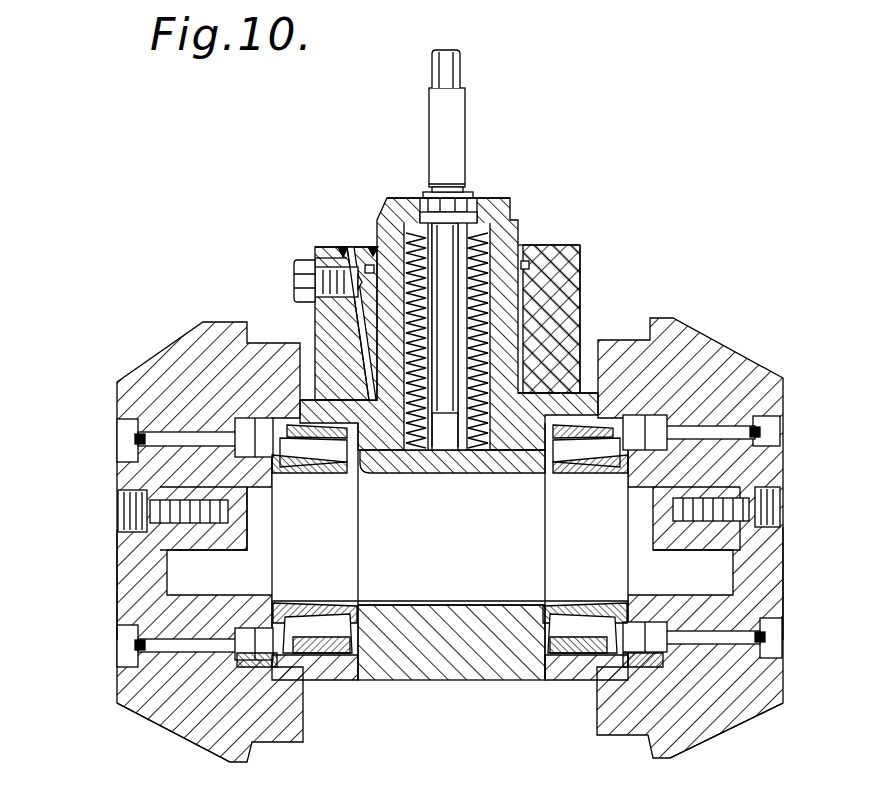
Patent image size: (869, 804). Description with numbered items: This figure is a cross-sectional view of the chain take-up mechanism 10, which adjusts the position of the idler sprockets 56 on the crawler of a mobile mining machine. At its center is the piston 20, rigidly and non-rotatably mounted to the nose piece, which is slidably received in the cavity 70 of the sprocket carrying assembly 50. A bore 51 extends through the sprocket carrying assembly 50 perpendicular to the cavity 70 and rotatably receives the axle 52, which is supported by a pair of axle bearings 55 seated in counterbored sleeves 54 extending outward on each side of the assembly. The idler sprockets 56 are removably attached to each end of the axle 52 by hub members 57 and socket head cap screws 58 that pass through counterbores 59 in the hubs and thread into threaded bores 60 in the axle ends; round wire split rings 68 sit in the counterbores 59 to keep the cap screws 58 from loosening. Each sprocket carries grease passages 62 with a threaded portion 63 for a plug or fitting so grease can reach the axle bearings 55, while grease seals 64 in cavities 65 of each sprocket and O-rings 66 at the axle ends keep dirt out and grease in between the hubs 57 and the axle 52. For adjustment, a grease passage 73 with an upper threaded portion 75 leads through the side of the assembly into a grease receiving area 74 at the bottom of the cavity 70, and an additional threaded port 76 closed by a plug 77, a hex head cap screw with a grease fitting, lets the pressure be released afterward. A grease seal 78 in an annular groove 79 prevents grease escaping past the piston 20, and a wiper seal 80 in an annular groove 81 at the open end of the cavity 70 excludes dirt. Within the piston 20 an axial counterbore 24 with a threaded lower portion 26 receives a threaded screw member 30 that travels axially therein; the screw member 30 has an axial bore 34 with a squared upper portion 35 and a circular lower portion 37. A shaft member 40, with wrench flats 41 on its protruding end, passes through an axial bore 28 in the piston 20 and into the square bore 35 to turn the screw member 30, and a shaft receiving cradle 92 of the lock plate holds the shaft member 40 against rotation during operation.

The take-up mechanism 10 is at (552, 184).
The piston 20 is at (522, 227).
The axial counterbore 24 is at (583, 302).
The threaded lower portion 26 is at (375, 470).
The axial bore 28 is at (480, 195).
The threaded screw member 30 is at (492, 198).
The axial bore 34 is at (455, 440).
The squared upper portion 35 is at (420, 228).
The circular lower portion 37 is at (571, 322).
The shaft member 40 is at (460, 105).
The wrench flats 41 is at (455, 68).
The sprocket carrying assembly 50 is at (592, 290).
The bore 51 is at (497, 610).
The axle 52 is at (247, 582).
The counterbored sleeves 54 is at (380, 650).
The axle bearings 55 is at (348, 650).
The idler sprockets 56 is at (172, 367).
The hub members 57 is at (127, 570).
The socket head cap screws 58 is at (128, 512).
The counterbores 59 is at (117, 490).
The threaded bores 60 is at (230, 530).
The grease passages 62 is at (133, 420).
The threaded portion 63 is at (133, 448).
The grease seals 64 is at (180, 437).
The cavities 65 is at (200, 680).
The O-rings 66 is at (117, 583).
The round wire split rings 68 is at (117, 553).
The cavity 70 is at (575, 325).
The grease passage 73 is at (350, 333).
The grease receiving area 74 is at (523, 450).
The upper threaded portion 75 is at (343, 247).
The threaded port 76 is at (315, 252).
The plug 77 is at (295, 285).
The grease seal 78 is at (573, 272).
The annular groove 79 is at (525, 248).
The wiper seal 80 is at (342, 245).
The annular groove 81 is at (372, 243).
The shaft receiving cradle 92 is at (450, 455).